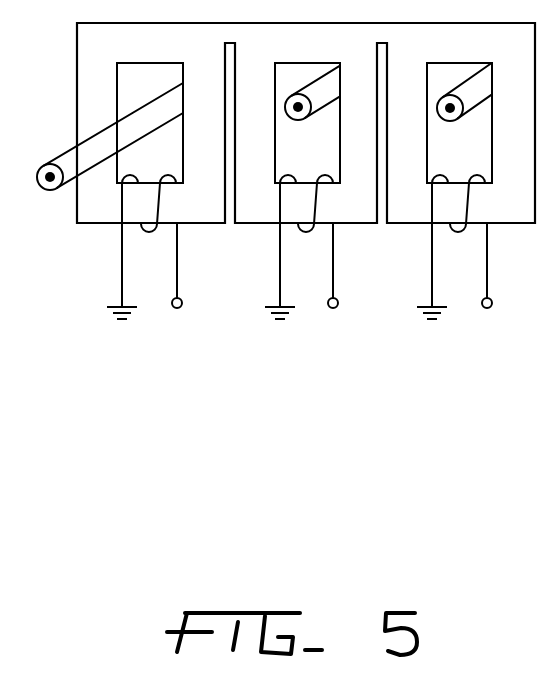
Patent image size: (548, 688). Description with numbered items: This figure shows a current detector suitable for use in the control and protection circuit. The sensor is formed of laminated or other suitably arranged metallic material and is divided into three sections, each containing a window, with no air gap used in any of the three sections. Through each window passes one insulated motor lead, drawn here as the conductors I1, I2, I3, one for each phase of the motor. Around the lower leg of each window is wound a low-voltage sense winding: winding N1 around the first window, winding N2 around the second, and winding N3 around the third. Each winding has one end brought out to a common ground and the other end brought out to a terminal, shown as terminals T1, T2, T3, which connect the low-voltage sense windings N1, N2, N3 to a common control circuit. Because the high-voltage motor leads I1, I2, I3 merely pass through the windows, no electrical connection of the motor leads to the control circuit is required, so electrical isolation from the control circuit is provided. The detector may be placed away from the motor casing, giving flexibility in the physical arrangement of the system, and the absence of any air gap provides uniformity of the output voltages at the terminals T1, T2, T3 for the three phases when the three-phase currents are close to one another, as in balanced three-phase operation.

The low-voltage sense winding N1 is at (145, 228).
The low-voltage sense winding N2 is at (302, 229).
The low-voltage sense winding N3 is at (454, 229).
The first phase conductor I1 is at (101, 152).
The second phase conductor I2 is at (312, 112).
The third phase conductor I3 is at (464, 112).
The first terminal T1 is at (197, 283).
The second terminal T2 is at (351, 284).
The third terminal T3 is at (506, 284).